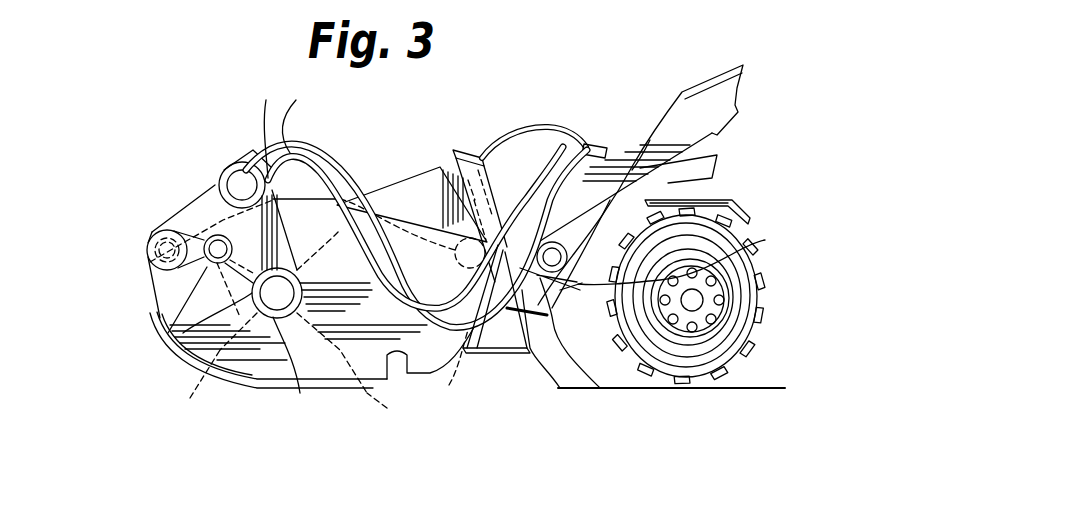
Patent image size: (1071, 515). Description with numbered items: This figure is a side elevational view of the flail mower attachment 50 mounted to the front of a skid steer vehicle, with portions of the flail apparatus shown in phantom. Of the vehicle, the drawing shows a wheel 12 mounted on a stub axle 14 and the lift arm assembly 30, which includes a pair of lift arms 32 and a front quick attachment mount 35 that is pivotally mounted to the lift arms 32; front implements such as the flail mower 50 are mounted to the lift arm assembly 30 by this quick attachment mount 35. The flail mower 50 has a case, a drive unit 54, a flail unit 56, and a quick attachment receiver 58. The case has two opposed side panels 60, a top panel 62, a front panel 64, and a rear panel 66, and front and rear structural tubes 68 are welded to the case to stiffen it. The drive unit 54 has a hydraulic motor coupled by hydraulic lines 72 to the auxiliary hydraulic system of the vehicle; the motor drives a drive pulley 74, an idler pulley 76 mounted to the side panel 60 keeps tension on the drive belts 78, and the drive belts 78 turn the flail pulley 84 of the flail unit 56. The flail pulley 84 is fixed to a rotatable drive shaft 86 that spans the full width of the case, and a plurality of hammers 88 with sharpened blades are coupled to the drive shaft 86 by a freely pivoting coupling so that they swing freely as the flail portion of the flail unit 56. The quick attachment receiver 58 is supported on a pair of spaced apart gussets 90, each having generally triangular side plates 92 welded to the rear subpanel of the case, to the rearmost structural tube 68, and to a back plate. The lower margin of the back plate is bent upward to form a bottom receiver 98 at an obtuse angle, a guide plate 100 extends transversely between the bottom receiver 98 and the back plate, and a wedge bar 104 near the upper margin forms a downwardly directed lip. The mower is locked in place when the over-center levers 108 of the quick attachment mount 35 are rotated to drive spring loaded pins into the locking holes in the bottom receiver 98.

The wheels 12 is at (737, 345).
The stub axles 14 is at (703, 300).
The lift arm assembly 30 is at (681, 92).
The lift arms 32 is at (663, 118).
The quick attachment mount 35 is at (690, 253).
The flail mower attachment 50 is at (227, 140).
The drive unit 54 is at (223, 165).
The flail unit 56 is at (283, 318).
The quick attachment receiver 58 is at (457, 150).
The side panels 60 is at (252, 300).
The top panel 62 is at (160, 222).
The front panel 64 is at (153, 290).
The rear panel 66 is at (530, 355).
The structural tubes 68 is at (150, 262).
The hydraulic lines 72 is at (416, 200).
The drive pulley 74 is at (218, 180).
The idler pulley 76 is at (173, 328).
The drive belts 78 is at (394, 191).
The flail pulley 84 is at (237, 367).
The drive shaft 86 is at (200, 350).
The hammers 88 is at (285, 393).
The gussets 90 is at (437, 167).
The side plates 92 is at (423, 203).
The bottom receiver 98 is at (572, 340).
The guide plate 100 is at (535, 330).
The wedge bar 104 is at (474, 157).
The over-center levers 108 is at (510, 176).